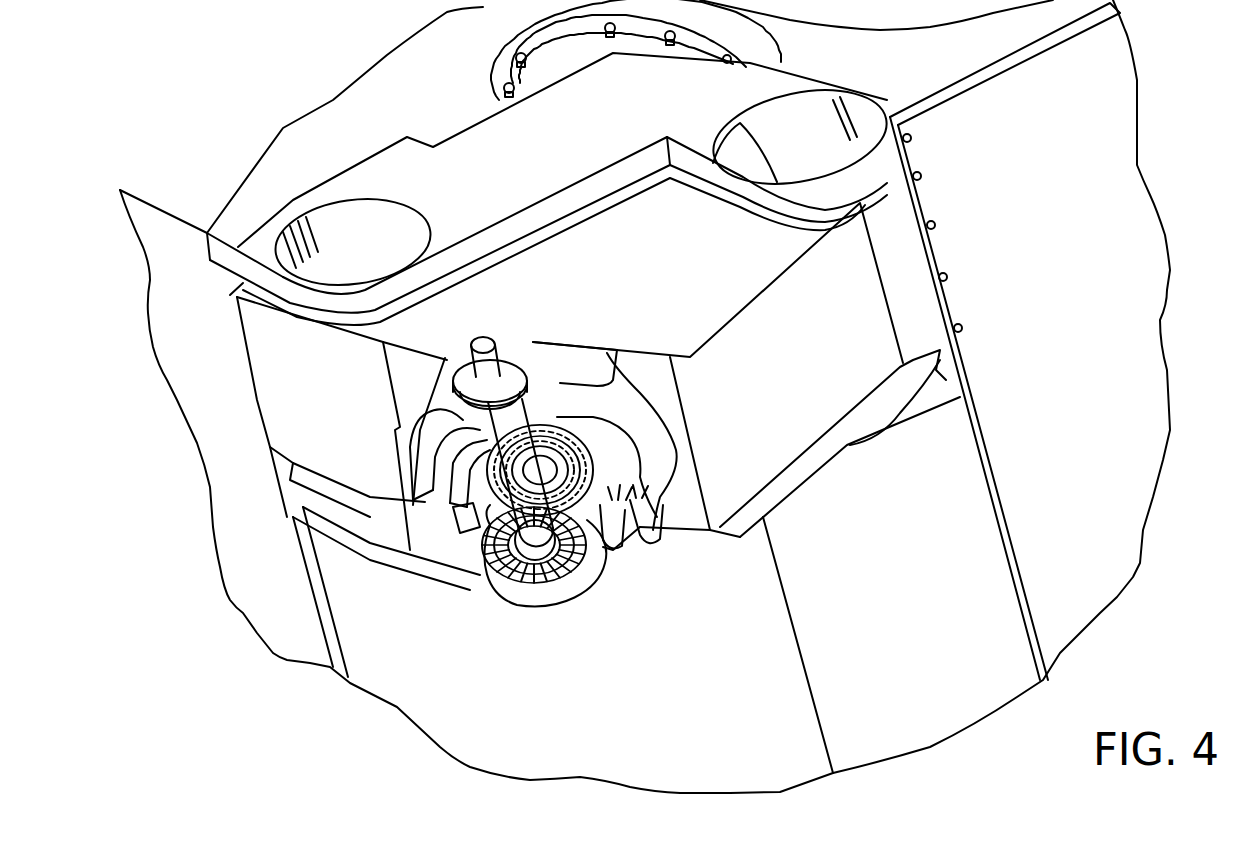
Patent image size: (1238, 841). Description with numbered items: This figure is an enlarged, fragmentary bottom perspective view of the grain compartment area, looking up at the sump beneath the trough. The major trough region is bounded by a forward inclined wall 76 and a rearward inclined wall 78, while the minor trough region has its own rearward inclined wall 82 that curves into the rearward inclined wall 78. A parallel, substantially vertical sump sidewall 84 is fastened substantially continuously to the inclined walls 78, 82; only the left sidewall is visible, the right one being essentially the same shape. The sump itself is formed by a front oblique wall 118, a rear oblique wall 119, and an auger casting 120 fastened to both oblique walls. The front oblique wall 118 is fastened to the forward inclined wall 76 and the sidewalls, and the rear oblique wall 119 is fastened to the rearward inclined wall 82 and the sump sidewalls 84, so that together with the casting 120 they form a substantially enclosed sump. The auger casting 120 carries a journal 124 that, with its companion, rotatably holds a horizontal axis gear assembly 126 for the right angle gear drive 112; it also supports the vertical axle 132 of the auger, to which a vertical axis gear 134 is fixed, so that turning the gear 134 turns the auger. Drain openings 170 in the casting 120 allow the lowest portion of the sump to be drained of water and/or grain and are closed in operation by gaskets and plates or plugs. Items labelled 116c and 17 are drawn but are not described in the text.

The forward inclined wall 76 is at (168, 227).
The sump sidewall 84 is at (660, 266).
The rearward inclined wall 82 is at (1030, 302).
The rear oblique wall 119 is at (765, 320).
The front oblique wall 118 is at (355, 404).
The rearward inclined wall 78 is at (748, 659).
The cylindrical mount 116c is at (483, 337).
The auger casting 120 is at (652, 419).
The vertical axle 132 is at (548, 465).
The vertical axis gear 134 is at (563, 462).
The right angle gear drive 112 is at (507, 560).
The horizontal axis gear assembly 126 is at (553, 577).
The journal 124 is at (557, 590).
The drain openings 170 is at (640, 530).
The hoses 17 is at (423, 490).